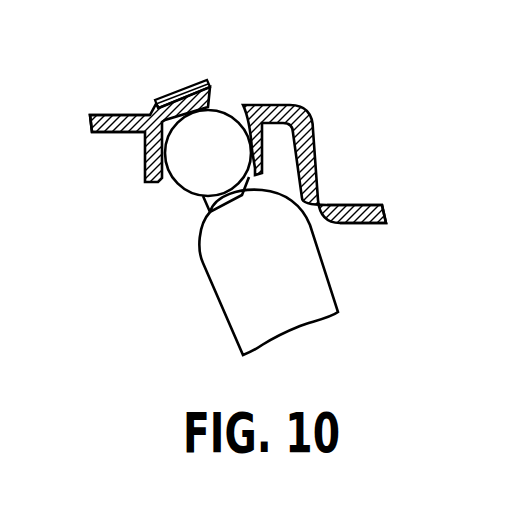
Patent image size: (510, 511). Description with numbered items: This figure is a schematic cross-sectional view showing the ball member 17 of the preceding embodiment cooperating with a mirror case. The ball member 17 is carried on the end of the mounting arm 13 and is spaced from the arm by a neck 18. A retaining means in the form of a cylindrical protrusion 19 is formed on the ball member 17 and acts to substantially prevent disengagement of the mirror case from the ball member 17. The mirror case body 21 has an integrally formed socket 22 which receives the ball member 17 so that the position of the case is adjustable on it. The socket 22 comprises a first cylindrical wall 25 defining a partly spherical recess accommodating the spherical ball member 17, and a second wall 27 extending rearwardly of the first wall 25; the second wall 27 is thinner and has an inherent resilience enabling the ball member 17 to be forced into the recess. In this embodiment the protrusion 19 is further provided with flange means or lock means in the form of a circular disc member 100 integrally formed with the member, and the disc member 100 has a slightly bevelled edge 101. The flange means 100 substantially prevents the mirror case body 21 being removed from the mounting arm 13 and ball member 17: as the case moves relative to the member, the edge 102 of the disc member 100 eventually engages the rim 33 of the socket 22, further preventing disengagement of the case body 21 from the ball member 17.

The arm 13 is at (247, 307).
The ball member 17 is at (195, 172).
The neck 18 is at (240, 195).
The cylindrical protrusion 19 is at (146, 135).
The mirror case body 21 is at (367, 203).
The socket 22 is at (113, 113).
The first cylindrical wall 25 is at (255, 139).
The second wall 27 is at (262, 170).
The rim 33 is at (150, 108).
The disc member 100 is at (190, 87).
The bevelled edge 101 is at (218, 97).
The edge 102 is at (210, 85).